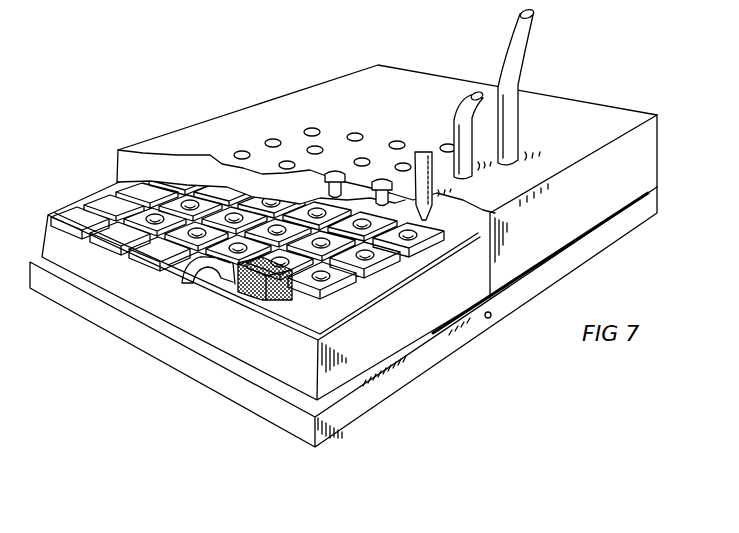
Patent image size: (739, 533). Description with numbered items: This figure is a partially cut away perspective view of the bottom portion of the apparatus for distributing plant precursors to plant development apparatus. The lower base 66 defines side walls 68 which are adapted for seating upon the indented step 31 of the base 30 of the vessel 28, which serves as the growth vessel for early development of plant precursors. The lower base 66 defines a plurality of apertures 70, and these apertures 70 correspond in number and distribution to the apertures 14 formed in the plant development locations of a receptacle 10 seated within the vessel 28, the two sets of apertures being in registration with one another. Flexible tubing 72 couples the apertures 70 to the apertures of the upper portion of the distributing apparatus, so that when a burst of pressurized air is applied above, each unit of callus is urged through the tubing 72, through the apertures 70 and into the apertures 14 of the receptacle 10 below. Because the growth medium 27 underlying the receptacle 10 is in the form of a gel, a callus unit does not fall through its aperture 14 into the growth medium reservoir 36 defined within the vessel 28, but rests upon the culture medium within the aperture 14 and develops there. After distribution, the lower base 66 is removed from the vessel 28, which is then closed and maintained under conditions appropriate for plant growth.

The receptacle 10 is at (203, 275).
The apertures 14 is at (350, 283).
The growth medium 27 is at (302, 315).
The vessel 28 is at (343, 317).
The base 30 is at (400, 378).
The indented step 31 is at (440, 330).
The growth medium reservoir 36 is at (257, 298).
The lower base 66 is at (383, 108).
The side walls 68 is at (640, 150).
The apertures 70 is at (277, 140).
The flexible tubing 72 is at (460, 122).